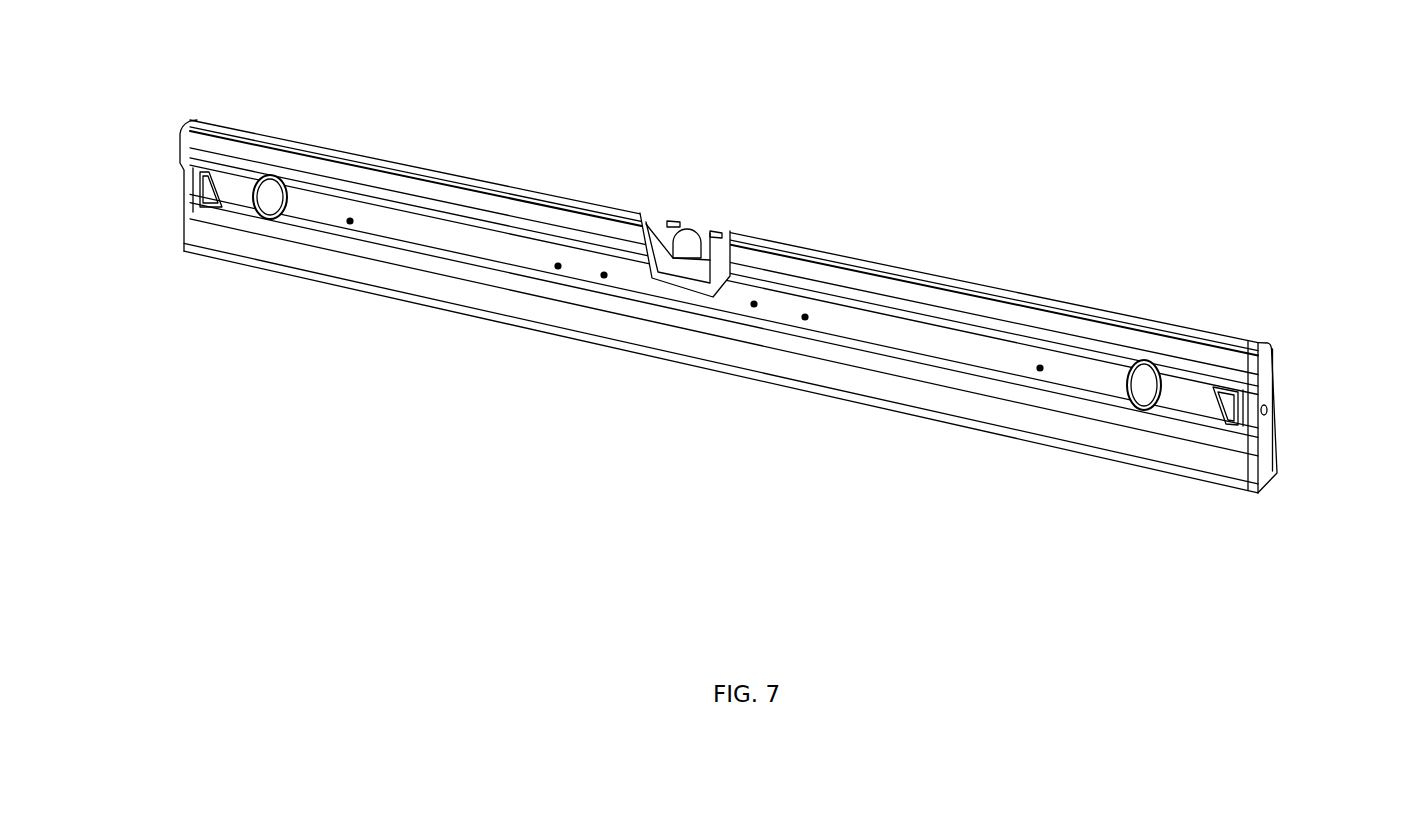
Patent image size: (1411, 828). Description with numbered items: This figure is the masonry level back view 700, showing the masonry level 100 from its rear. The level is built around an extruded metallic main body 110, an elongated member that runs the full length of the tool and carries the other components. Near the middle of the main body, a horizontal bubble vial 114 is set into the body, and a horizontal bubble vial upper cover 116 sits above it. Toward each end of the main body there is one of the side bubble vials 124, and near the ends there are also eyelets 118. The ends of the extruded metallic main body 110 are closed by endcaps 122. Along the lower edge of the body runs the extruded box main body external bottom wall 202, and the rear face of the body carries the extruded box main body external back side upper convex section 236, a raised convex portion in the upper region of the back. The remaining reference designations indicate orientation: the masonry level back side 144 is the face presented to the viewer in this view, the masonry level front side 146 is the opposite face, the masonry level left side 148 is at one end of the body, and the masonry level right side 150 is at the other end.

The masonry level 100 is at (385, 362).
The extruded metallic main body 110 is at (1170, 485).
The horizontal bubble vial 114 is at (686, 228).
The horizontal bubble vial upper cover 116 is at (727, 232).
The eyelets 118 is at (202, 180).
The endcaps 122 is at (1270, 360).
The side bubble vials 124 is at (275, 195).
The masonry level back side 144 is at (540, 510).
The masonry level front side 146 is at (913, 130).
The masonry level left side 148 is at (1293, 455).
The masonry level right side 150 is at (158, 137).
The extruded box main body external bottom wall 202 is at (1073, 472).
The extruded box main body external back side upper convex section 236 is at (920, 305).
The masonry level back view 700 is at (1120, 145).